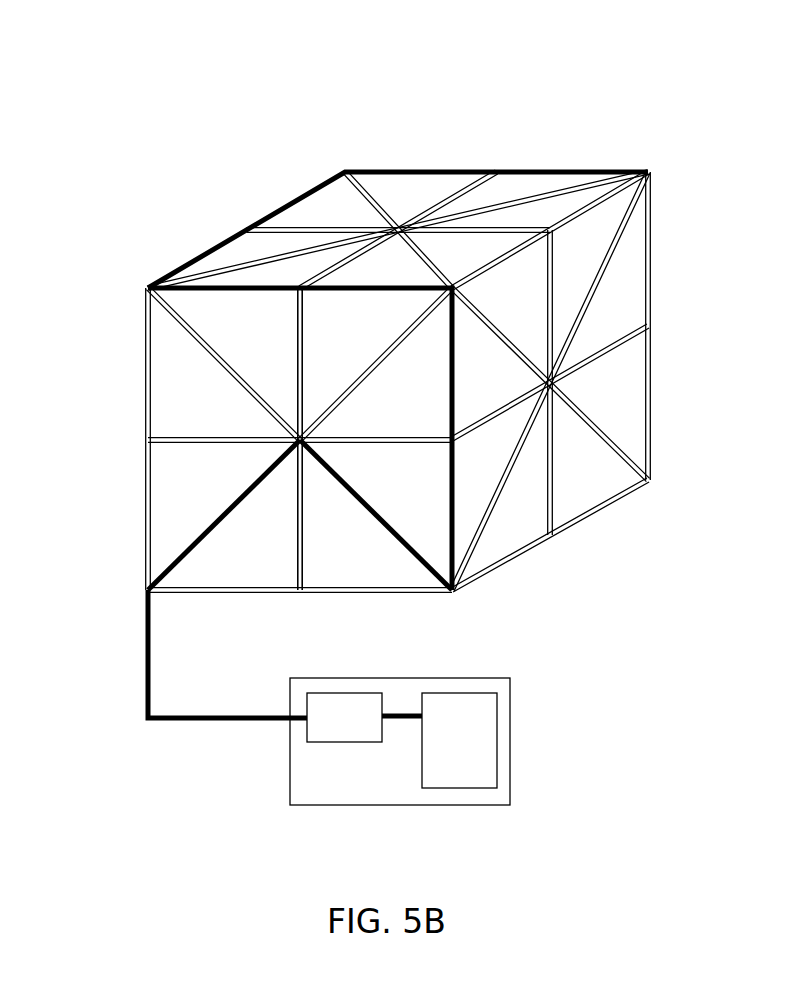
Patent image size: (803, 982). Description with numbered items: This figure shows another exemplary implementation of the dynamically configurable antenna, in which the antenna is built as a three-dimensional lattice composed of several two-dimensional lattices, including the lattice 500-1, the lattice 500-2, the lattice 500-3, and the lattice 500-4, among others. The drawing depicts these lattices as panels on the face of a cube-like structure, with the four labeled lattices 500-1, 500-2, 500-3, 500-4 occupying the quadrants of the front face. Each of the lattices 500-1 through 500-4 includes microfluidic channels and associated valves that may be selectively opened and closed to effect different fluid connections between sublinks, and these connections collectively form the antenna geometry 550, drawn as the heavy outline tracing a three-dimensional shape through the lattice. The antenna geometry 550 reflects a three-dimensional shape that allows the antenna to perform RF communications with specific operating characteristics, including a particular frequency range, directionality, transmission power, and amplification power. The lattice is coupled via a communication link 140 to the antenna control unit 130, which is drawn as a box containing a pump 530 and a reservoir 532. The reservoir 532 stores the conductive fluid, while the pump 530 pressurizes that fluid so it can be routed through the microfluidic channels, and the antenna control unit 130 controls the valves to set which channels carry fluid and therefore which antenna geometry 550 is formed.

The antenna geometry 550 is at (290, 203).
The 2D lattice 500-1 is at (224, 364).
The 2D lattice 500-2 is at (376, 364).
The 2D lattice 500-3 is at (224, 516).
The 2D lattice 500-4 is at (375, 516).
The communication link 140 is at (146, 668).
The antenna control unit 130 is at (510, 734).
The pump 530 is at (327, 729).
The reservoir 532 is at (443, 727).